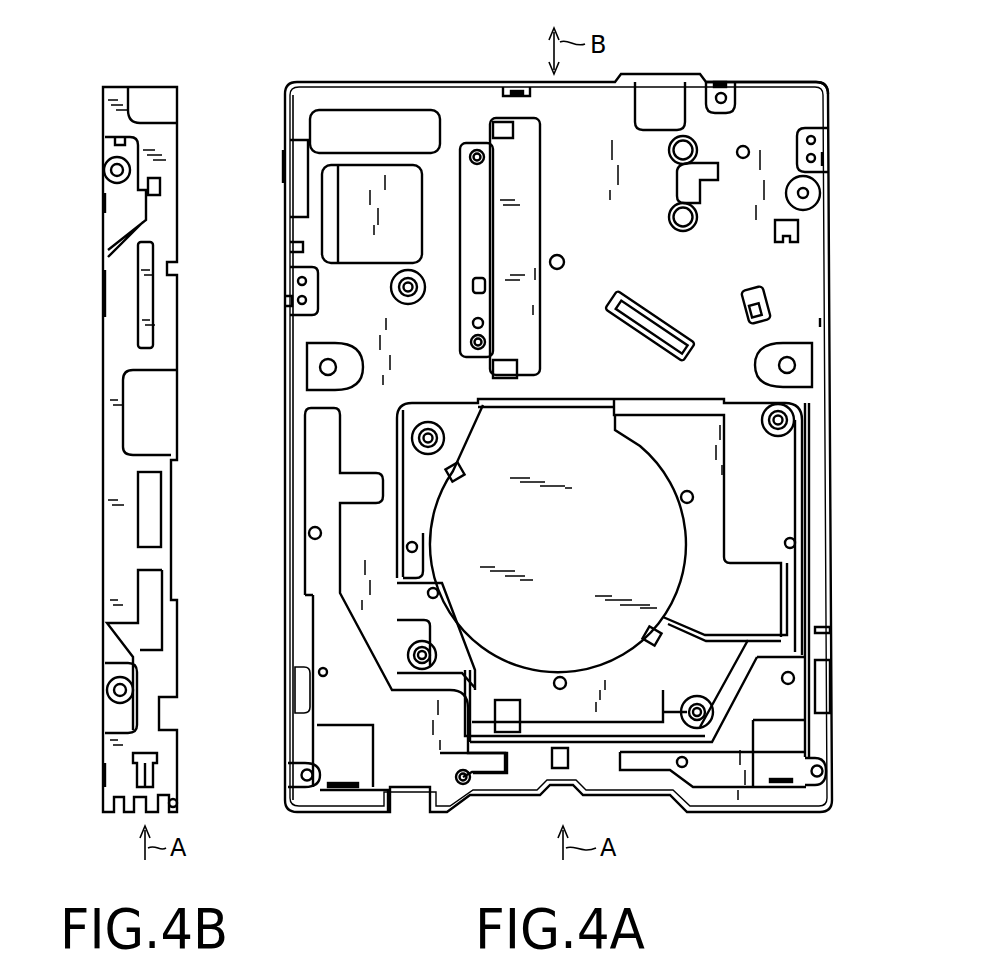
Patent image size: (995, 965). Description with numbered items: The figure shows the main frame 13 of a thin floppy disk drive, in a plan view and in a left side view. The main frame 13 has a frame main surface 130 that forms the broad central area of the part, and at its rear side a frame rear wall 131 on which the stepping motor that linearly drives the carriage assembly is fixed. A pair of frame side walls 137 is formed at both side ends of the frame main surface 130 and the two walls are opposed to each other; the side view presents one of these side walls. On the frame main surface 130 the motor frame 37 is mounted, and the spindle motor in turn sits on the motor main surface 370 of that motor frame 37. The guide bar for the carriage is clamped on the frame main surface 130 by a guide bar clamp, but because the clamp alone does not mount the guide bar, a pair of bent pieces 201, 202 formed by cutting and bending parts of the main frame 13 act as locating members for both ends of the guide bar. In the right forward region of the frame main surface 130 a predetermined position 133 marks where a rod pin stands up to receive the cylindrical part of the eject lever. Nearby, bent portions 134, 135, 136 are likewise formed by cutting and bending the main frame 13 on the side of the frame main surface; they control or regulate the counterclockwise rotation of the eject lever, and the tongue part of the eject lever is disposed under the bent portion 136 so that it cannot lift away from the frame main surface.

In FIG. 4A, the main frame 13 is at (818, 512).
In FIG. 4B, the main frame 13 is at (178, 665).
In FIG. 4A, the frame main surface 130 is at (332, 327).
In FIG. 4A, the frame rear wall 131 is at (752, 80).
In FIG. 4A, the predetermined position 133 is at (806, 196).
In FIG. 4A, the bent portion 134 is at (787, 240).
In FIG. 4A, the bent portion 135 is at (750, 320).
In FIG. 4A, the bent portion 136 is at (685, 330).
In FIG. 4A, the frame side wall 137 is at (290, 437).
In FIG. 4B, the frame side wall 137 is at (110, 493).
In FIG. 4A, the motor frame 37 is at (763, 585).
In FIG. 4A, the motor main surface 370 is at (763, 615).
In FIG. 4A, the bent piece 201 is at (517, 370).
In FIG. 4A, the bent piece 202 is at (513, 130).